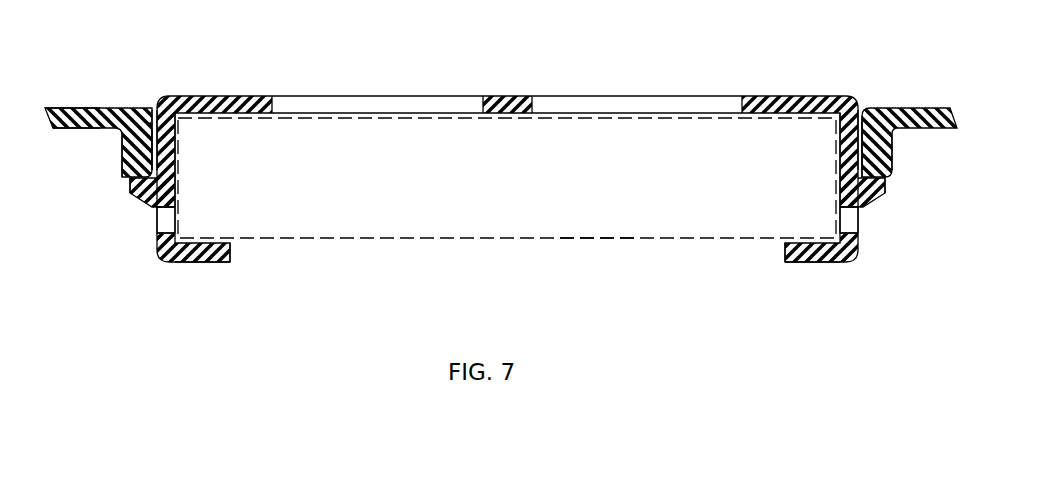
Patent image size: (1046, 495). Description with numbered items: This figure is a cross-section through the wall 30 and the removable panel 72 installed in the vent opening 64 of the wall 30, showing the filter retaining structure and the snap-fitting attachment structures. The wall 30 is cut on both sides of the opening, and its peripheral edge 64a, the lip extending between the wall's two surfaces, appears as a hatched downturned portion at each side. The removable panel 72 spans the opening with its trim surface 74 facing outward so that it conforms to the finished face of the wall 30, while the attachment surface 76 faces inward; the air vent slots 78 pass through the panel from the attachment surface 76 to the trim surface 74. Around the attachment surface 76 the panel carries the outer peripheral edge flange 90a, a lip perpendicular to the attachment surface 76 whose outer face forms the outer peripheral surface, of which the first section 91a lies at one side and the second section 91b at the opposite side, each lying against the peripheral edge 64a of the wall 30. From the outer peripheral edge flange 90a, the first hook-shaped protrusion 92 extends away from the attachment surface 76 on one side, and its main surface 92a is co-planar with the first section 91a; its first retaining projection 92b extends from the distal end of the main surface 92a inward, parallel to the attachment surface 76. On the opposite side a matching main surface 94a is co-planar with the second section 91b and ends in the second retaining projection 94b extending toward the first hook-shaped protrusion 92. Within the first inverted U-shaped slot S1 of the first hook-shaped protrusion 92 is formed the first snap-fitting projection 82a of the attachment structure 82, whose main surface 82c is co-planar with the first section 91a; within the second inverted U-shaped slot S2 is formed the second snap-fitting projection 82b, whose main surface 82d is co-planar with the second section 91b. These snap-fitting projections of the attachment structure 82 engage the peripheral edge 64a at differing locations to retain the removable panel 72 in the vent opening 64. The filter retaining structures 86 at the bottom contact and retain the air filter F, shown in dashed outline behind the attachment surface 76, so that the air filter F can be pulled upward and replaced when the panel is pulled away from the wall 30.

The wall 30 is at (70, 107).
The vent opening 64 is at (151, 113).
The peripheral edge 64a is at (128, 155).
The removable panel 72 is at (222, 96).
The trim surface 74 is at (800, 96).
The attachment surface 76 is at (772, 113).
The air vent slots 78 is at (391, 95).
The attachment structure 82 is at (132, 198).
The first snap-fitting projection 82a is at (175, 188).
The second snap-fitting projection 82b is at (855, 193).
The main surface 82c is at (150, 127).
The main surface 82d is at (875, 128).
The filter retaining structure 86 is at (210, 263).
The outer peripheral edge flange 90a is at (173, 155).
The first section 91a is at (152, 127).
The second section 91b is at (858, 132).
The first hook-shaped protrusion 92 is at (158, 252).
The main surface 92a is at (152, 239).
The first retaining projection 92b is at (230, 252).
The main surface 94a is at (860, 228).
The second retaining projection 94b is at (786, 248).
The first inverted U-shaped slot S1 is at (167, 220).
The second inverted U-shaped slot S2 is at (848, 220).
The air filter F is at (593, 242).